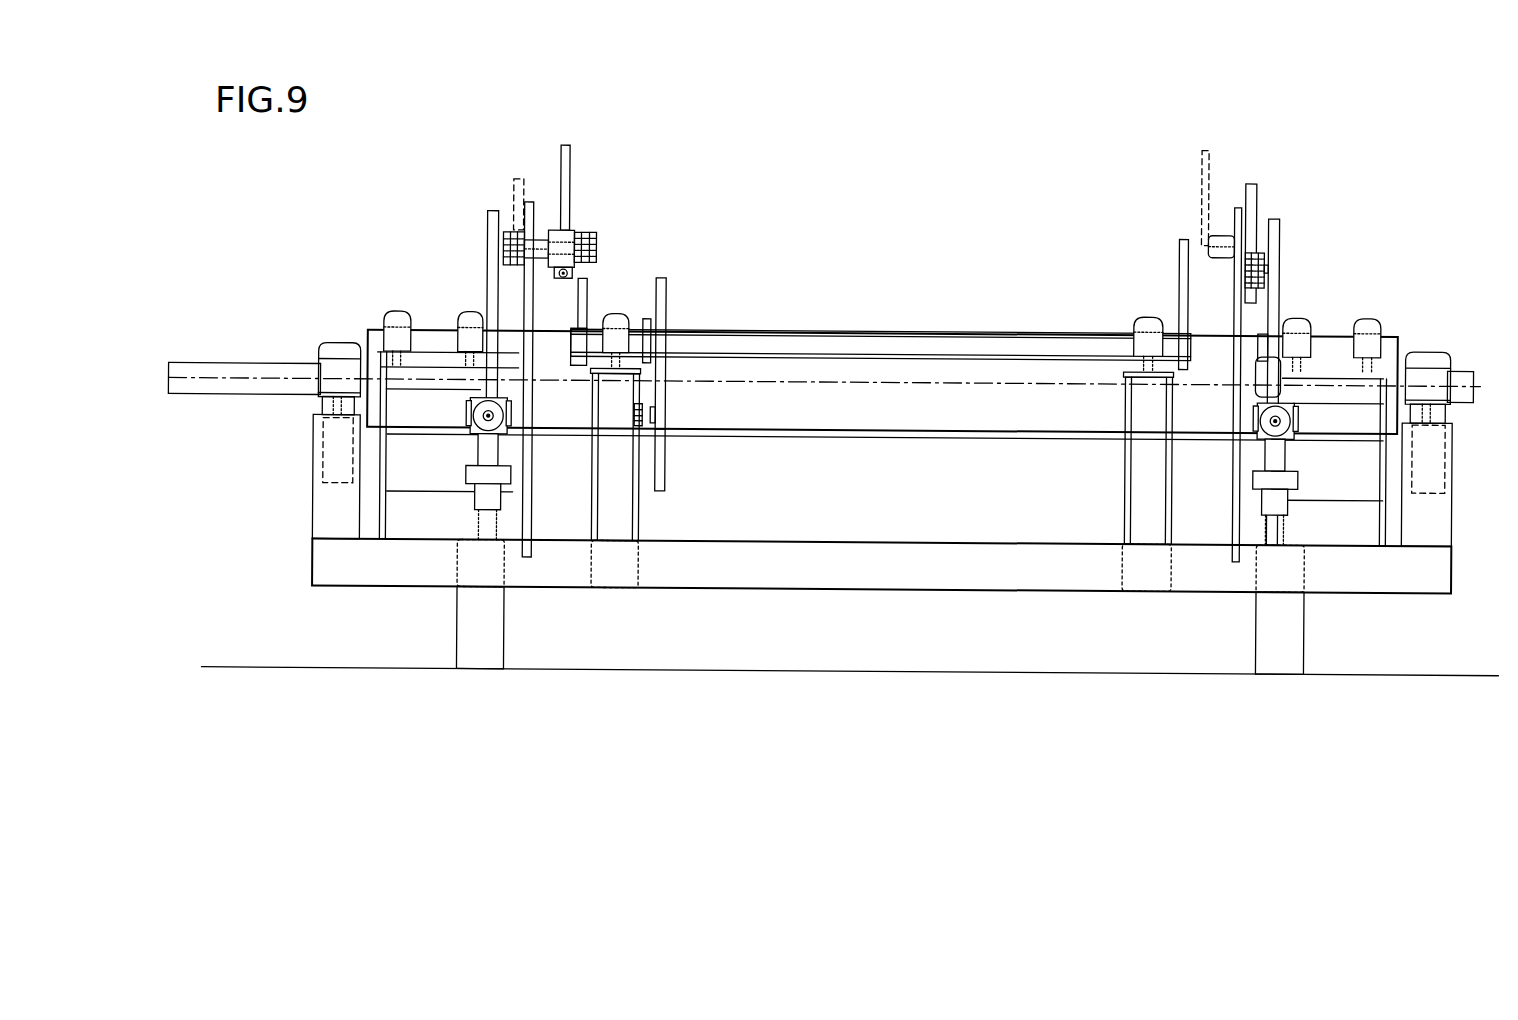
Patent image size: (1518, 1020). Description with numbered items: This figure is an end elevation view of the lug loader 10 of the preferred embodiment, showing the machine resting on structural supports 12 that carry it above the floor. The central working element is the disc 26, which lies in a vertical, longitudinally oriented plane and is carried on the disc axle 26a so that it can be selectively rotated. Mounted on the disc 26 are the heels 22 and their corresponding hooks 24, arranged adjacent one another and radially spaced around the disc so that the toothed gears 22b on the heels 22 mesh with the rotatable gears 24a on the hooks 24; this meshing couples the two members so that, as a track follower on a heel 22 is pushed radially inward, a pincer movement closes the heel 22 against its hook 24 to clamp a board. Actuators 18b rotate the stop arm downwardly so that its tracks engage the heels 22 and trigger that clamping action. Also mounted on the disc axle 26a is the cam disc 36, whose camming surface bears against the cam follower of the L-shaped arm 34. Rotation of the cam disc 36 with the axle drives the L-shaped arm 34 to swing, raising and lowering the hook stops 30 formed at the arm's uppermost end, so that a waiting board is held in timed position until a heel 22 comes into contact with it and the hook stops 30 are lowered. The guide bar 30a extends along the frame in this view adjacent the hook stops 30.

The lug loader 10 is at (832, 135).
The structural supports 12 is at (378, 570).
The actuators 18b is at (514, 458).
The heels 22 is at (1253, 183).
The toothed gears 22b is at (1262, 250).
The hooks 24 is at (566, 186).
The rotatable gears 24a is at (592, 240).
The disc 26 is at (533, 560).
The disc axle 26a is at (905, 433).
The hook stops 30 is at (588, 292).
The guide bar 30a is at (870, 333).
The L-shaped arm 34 is at (629, 316).
The cam disc 36 is at (667, 490).